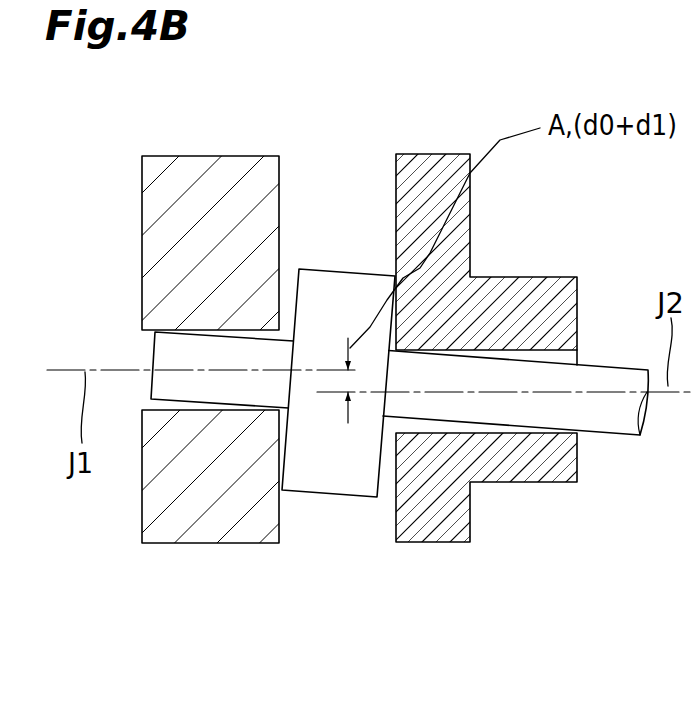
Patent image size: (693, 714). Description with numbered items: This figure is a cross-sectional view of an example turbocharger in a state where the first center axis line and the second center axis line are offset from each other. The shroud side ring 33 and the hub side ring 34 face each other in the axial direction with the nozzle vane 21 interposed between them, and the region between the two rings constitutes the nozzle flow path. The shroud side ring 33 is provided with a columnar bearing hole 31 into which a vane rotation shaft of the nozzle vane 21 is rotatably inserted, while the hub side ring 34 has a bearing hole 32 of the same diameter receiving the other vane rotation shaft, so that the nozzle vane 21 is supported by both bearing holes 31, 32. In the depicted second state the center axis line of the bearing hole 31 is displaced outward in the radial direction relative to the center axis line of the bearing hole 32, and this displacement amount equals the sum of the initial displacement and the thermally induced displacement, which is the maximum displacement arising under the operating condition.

The nozzle vane 21 is at (345, 504).
The bearing hole 31 is at (240, 336).
The bearing hole 32 is at (500, 348).
The shroud side ring 33 is at (200, 173).
The hub side ring 34 is at (431, 172).